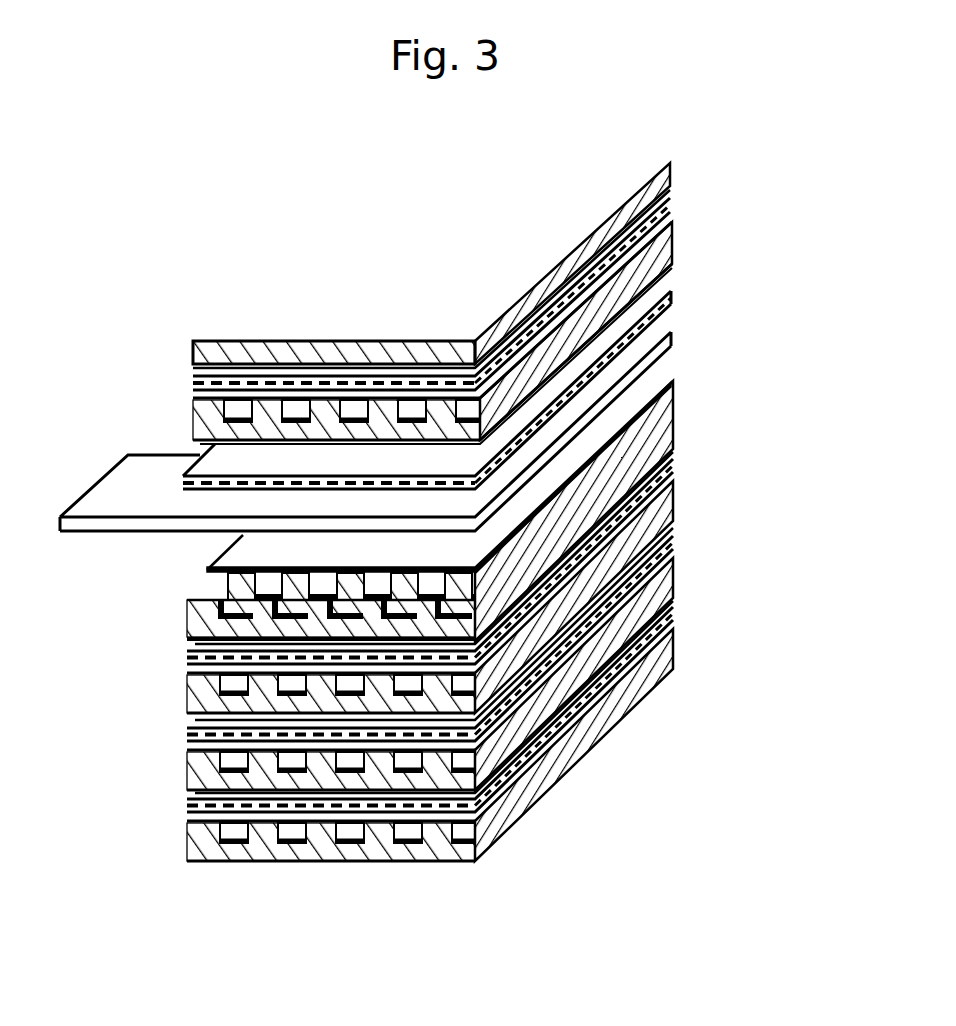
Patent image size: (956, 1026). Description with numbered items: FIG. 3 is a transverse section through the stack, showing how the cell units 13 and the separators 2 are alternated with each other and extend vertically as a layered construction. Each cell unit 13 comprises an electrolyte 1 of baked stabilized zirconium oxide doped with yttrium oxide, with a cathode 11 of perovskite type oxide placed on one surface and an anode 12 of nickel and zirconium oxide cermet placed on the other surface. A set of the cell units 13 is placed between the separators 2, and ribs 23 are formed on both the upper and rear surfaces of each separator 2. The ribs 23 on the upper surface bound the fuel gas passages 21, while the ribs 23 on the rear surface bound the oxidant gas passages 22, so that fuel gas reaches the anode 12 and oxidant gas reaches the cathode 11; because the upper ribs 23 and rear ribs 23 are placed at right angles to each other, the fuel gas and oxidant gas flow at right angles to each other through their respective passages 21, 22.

The electrolyte 1 is at (668, 340).
The separator 2 is at (441, 329).
The cathode 11 is at (670, 295).
The anode 12 is at (497, 464).
The cell unit 13 is at (450, 419).
The fuel gas passage 21 is at (352, 415).
The oxidant gas passage 22 is at (656, 281).
The rib 23 is at (273, 594).